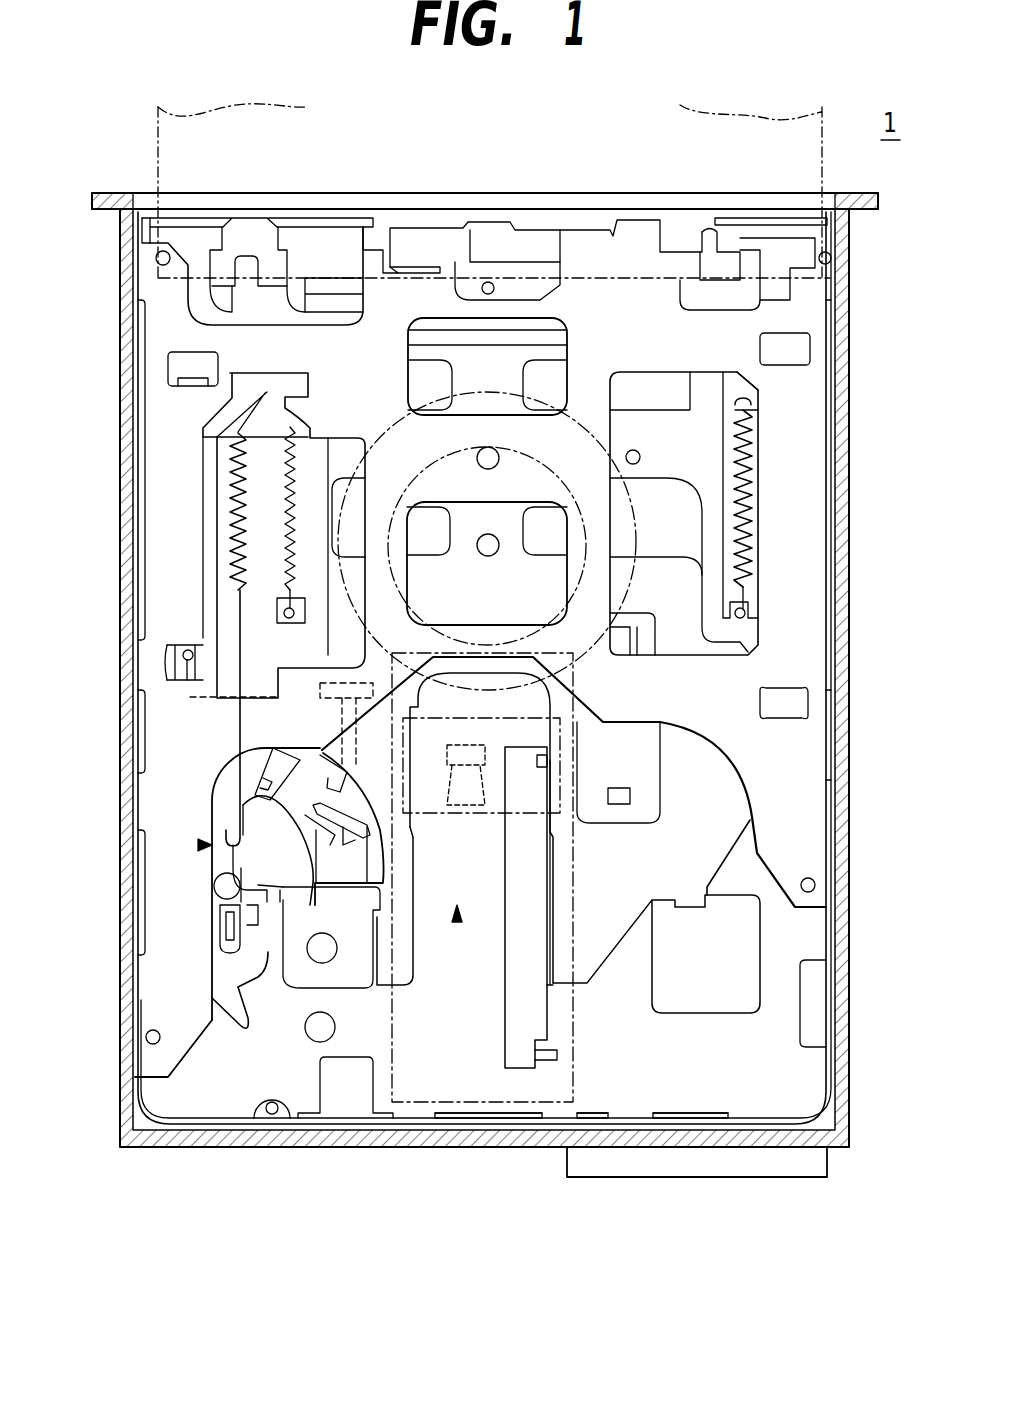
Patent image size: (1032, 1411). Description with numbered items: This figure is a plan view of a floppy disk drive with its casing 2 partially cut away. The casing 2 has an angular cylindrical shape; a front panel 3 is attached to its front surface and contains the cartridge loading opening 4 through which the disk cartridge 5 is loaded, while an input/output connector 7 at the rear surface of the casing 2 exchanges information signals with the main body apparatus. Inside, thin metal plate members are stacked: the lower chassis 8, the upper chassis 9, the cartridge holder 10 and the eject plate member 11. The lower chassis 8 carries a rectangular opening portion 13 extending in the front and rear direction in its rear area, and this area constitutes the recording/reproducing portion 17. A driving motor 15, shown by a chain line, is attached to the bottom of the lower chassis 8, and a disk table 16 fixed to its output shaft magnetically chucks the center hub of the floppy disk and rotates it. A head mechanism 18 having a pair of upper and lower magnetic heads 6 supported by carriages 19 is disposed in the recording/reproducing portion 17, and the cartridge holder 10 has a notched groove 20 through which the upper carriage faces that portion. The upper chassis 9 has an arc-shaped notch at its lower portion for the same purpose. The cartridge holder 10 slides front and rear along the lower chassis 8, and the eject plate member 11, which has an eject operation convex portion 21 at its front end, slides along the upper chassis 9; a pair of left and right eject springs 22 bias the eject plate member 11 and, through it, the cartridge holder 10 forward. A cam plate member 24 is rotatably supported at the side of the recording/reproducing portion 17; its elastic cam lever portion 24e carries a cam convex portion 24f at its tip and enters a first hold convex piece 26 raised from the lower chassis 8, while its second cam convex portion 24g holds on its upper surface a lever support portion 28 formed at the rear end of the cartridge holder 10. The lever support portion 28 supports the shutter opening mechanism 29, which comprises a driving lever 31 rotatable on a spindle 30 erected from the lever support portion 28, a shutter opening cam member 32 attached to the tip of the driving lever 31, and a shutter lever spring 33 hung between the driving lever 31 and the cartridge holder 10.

The casing 2 is at (850, 830).
The front panel 3 is at (878, 200).
The cartridge loading opening 4 is at (560, 205).
The disk cartridge 5 is at (158, 128).
The magnetic heads 6 is at (478, 750).
The input/output connector 7 is at (745, 1165).
The lower chassis 8 is at (742, 1077).
The upper chassis 9 is at (787, 748).
The cartridge holder 10 is at (707, 810).
The eject plate member 11 is at (745, 630).
The rectangular opening portion 13 is at (510, 925).
The driving motor 15 is at (738, 402).
The disk table 16 is at (722, 450).
The recording/reproducing portion 17 is at (457, 920).
The head mechanism 18 is at (477, 813).
The carriages 19 is at (573, 1070).
The notched groove 20 is at (557, 940).
The eject operation convex portion 21 is at (252, 232).
The eject springs 22 is at (275, 523).
The cam plate member 24 is at (210, 975).
The elastic cam lever portion 24e is at (302, 890).
The cam convex portion 24f is at (262, 706).
The second cam convex portion 24g is at (222, 975).
The first hold convex piece 26 is at (362, 892).
The lever support portion 28 is at (262, 863).
The shutter opening mechanism 29 is at (198, 845).
The spindle 30 is at (223, 893).
The driving lever 31 is at (227, 823).
The shutter opening cam member 32 is at (243, 788).
The shutter lever spring 33 is at (250, 568).